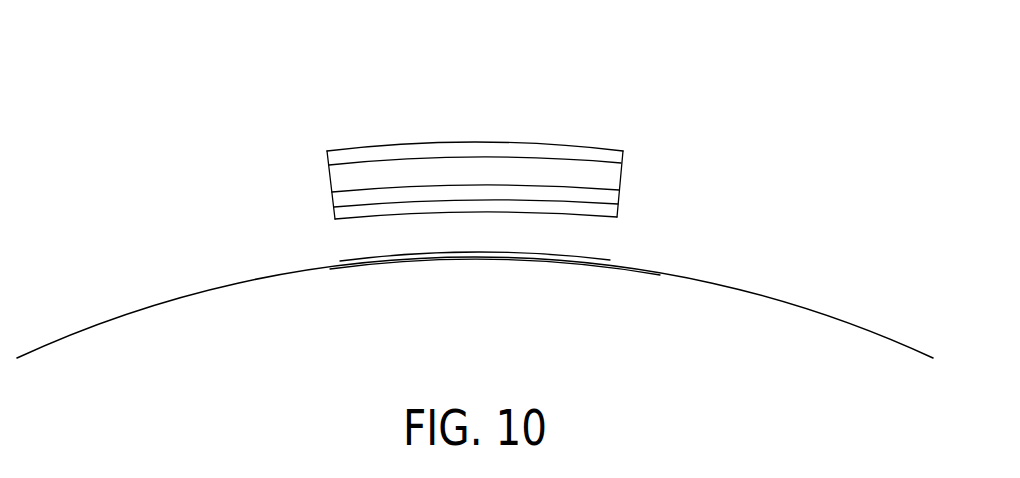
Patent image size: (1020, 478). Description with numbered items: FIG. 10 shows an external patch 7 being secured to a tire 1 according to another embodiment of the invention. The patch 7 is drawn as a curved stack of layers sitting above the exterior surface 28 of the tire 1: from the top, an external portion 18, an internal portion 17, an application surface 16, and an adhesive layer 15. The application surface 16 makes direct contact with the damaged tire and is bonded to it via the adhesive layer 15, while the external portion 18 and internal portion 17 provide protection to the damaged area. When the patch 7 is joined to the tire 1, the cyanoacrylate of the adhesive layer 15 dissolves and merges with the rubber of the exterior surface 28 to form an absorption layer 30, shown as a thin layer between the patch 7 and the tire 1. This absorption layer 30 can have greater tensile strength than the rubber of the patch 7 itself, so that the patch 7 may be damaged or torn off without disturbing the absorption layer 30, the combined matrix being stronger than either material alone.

The tire 1 is at (778, 338).
The external patch 7 is at (412, 105).
The adhesive layer 15 is at (602, 217).
The application surface 16 is at (602, 202).
The internal portion 17 is at (602, 178).
The external portion 18 is at (600, 157).
The exterior surface 28 is at (652, 272).
The absorption layer 30 is at (512, 252).